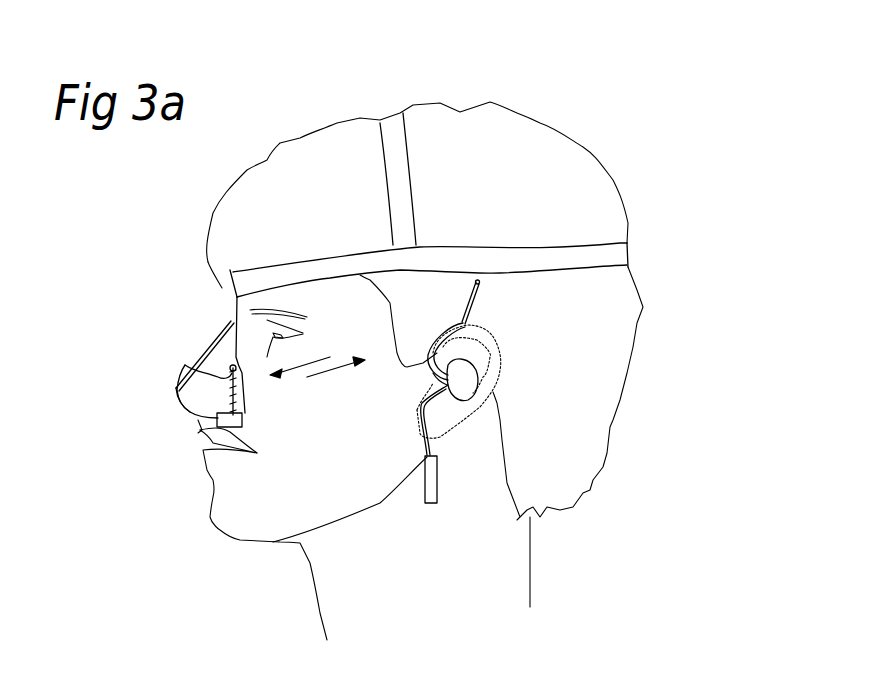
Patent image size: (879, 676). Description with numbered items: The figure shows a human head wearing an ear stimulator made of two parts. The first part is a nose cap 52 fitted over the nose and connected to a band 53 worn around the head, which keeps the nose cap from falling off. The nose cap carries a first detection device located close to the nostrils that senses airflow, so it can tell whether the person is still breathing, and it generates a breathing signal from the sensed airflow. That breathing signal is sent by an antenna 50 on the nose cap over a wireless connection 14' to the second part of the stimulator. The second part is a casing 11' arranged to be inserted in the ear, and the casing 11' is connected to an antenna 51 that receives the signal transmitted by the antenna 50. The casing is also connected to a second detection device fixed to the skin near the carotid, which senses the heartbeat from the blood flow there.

The band 53 is at (455, 260).
The antenna 51 is at (470, 293).
The casing 11' is at (486, 407).
The wireless connection 14' is at (317, 380).
The nose cap 52 is at (232, 321).
The antenna 50 is at (185, 366).